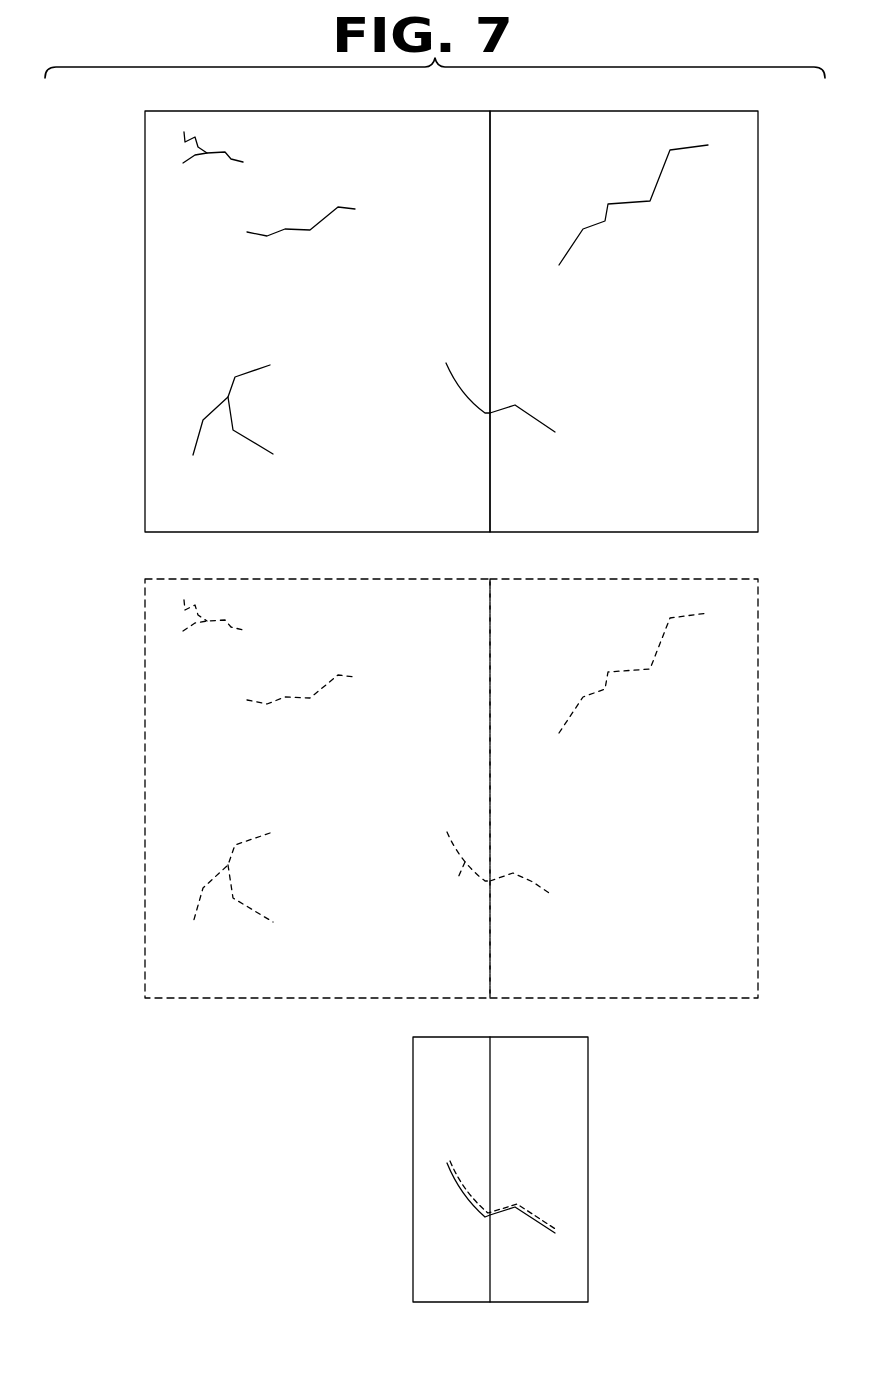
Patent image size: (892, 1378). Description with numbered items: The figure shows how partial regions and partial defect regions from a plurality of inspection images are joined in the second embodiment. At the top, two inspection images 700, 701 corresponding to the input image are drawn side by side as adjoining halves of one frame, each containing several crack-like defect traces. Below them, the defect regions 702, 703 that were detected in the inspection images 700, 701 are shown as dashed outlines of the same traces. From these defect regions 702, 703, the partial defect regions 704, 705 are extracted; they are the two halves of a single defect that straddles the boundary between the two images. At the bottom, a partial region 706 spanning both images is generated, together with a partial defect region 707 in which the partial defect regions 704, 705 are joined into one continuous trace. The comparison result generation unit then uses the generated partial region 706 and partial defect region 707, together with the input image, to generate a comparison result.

The inspection image 700 is at (317, 110).
The inspection image 701 is at (583, 110).
The defect region 702 is at (327, 573).
The defect region 703 is at (588, 573).
The partial defect region 704 is at (462, 877).
The partial defect region 705 is at (535, 881).
The partial region 706 is at (538, 1036).
The partial defect region 707 is at (527, 1198).